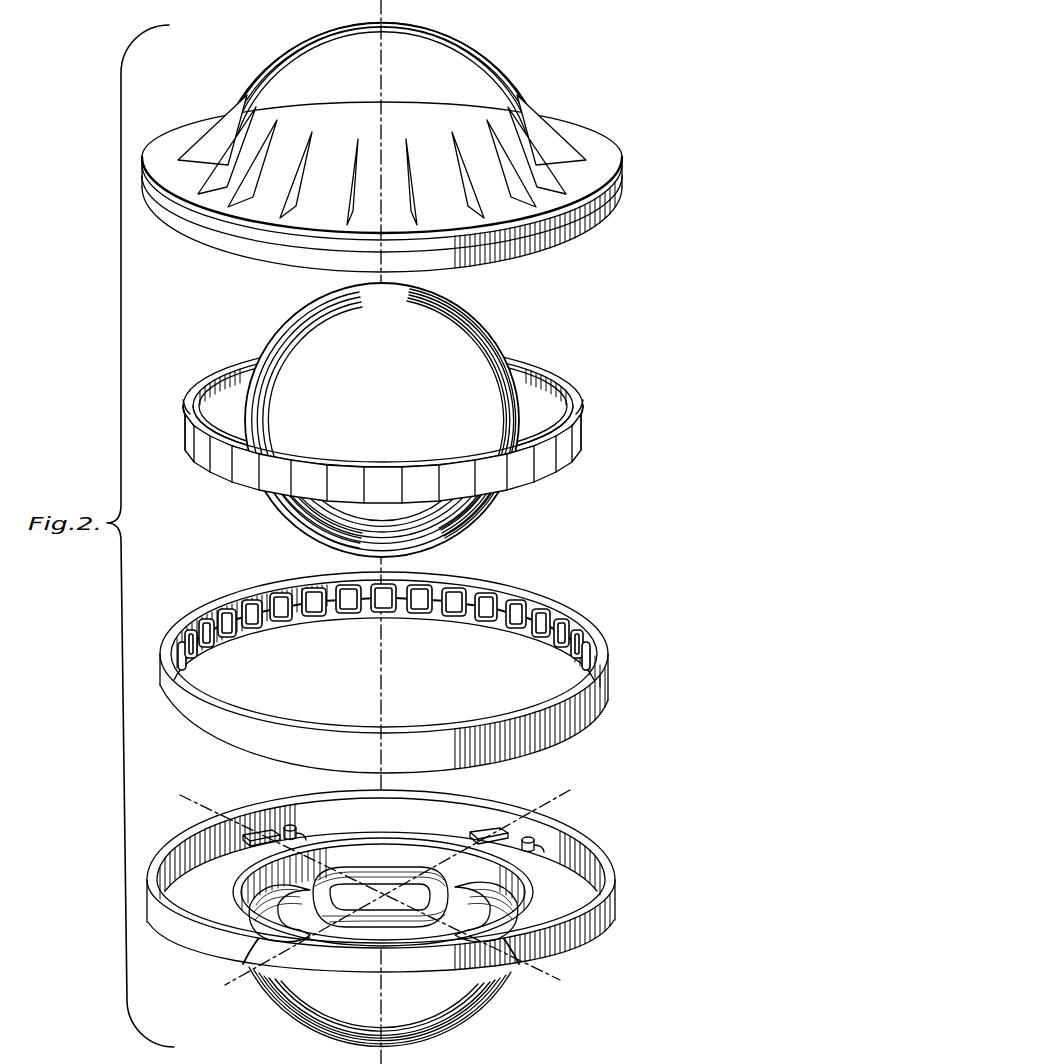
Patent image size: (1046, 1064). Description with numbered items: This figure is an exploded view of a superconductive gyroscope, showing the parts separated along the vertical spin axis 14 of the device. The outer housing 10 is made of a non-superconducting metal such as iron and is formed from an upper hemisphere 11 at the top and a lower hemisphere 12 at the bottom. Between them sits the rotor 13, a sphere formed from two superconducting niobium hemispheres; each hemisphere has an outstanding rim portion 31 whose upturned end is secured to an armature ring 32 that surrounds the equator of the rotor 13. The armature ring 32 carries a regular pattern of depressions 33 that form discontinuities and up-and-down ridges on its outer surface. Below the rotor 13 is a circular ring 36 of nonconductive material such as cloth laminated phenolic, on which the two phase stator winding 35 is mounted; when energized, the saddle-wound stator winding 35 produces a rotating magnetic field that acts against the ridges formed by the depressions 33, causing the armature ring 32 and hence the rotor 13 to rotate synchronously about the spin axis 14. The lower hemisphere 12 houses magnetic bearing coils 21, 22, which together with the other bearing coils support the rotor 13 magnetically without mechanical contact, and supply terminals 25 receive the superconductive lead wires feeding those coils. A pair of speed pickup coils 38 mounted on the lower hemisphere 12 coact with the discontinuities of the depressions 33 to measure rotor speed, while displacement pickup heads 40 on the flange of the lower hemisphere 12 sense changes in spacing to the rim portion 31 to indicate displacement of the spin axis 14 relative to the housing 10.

The outer housing 10 is at (382, 147).
The upper hemisphere 11 is at (287, 70).
The lower hemisphere 12 is at (318, 1015).
The rotor 13 is at (316, 322).
The spin axis 14 is at (382, 95).
The magnetic bearing coil 21 is at (240, 902).
The magnetic bearing coil 22 is at (484, 888).
The supply terminals 25 is at (462, 628).
The rim portion 31 is at (243, 360).
The armature ring 32 is at (192, 388).
The depressions 33 is at (240, 470).
The two phase stator winding 35 is at (213, 607).
The circular ring 36 is at (225, 730).
The speed pickup coils 38 is at (292, 826).
The displacement pickup head 40 is at (263, 832).